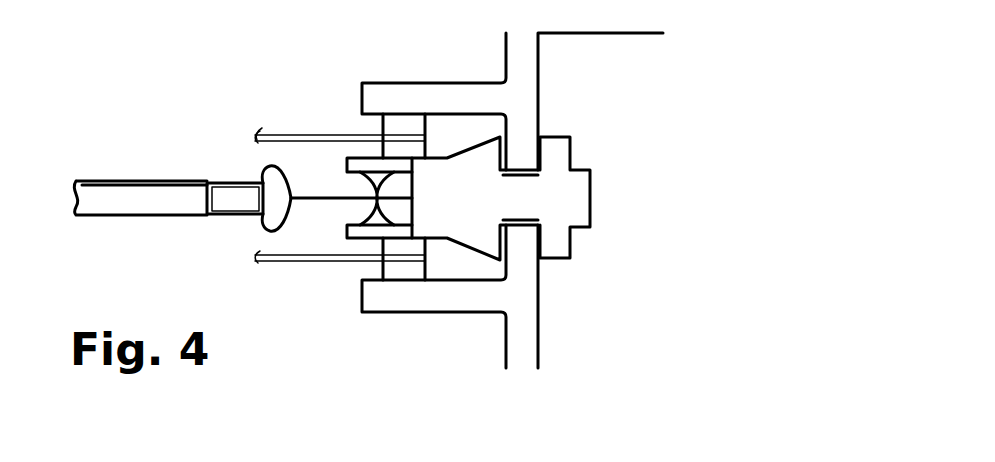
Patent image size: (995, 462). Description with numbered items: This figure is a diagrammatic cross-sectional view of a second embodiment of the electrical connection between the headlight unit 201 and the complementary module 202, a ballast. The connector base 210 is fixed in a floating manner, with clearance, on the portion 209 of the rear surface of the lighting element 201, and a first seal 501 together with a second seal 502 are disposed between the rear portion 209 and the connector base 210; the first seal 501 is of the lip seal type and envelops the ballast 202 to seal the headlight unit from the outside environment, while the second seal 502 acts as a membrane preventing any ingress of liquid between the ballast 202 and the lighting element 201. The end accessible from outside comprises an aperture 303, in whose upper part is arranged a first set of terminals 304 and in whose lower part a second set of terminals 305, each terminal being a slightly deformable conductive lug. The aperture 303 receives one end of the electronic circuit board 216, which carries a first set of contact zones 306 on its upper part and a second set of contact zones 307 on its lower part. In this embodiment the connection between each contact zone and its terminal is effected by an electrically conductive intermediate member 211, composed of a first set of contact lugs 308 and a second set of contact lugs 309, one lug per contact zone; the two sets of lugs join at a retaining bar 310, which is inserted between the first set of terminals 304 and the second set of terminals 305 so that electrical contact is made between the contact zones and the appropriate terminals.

The headlight unit 201 is at (683, 108).
The complementary module 202 is at (297, 135).
The rear surface portion 209 is at (520, 77).
The connector base 210 is at (595, 197).
The intermediate member 211 is at (268, 118).
The electronic circuit board 216 is at (101, 188).
The aperture 303 is at (417, 172).
The first set of terminals 304 is at (372, 158).
The second set of terminals 305 is at (347, 215).
The first set of contact zones 306 is at (215, 178).
The second set of contact zones 307 is at (213, 217).
The first set of contact lugs 308 is at (242, 177).
The second set of contact lugs 309 is at (253, 227).
The retaining bar 310 is at (317, 194).
The first seal 501 is at (405, 123).
The second seal 502 is at (413, 148).